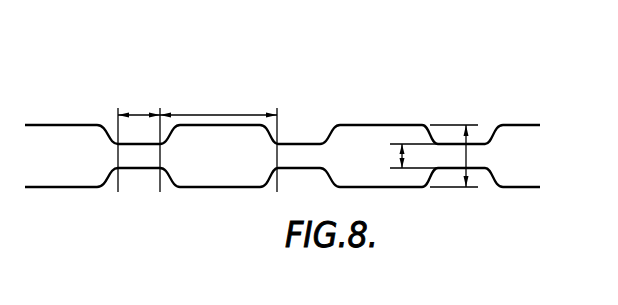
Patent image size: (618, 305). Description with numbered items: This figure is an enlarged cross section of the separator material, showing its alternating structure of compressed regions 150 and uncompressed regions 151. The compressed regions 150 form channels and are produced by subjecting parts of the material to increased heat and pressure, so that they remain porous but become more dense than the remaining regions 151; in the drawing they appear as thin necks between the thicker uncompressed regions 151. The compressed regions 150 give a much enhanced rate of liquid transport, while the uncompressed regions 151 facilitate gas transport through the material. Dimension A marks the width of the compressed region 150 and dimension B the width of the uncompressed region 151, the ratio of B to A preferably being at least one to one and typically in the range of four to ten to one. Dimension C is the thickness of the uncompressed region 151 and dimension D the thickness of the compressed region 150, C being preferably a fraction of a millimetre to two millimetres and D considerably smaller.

The compressed region 150 is at (138, 168).
The uncompressed region 151 is at (205, 187).
The width of compressed region A is at (139, 141).
The width of uncompressed region B is at (218, 141).
The thickness of uncompressed region C is at (467, 156).
The thickness of compressed region D is at (409, 156).